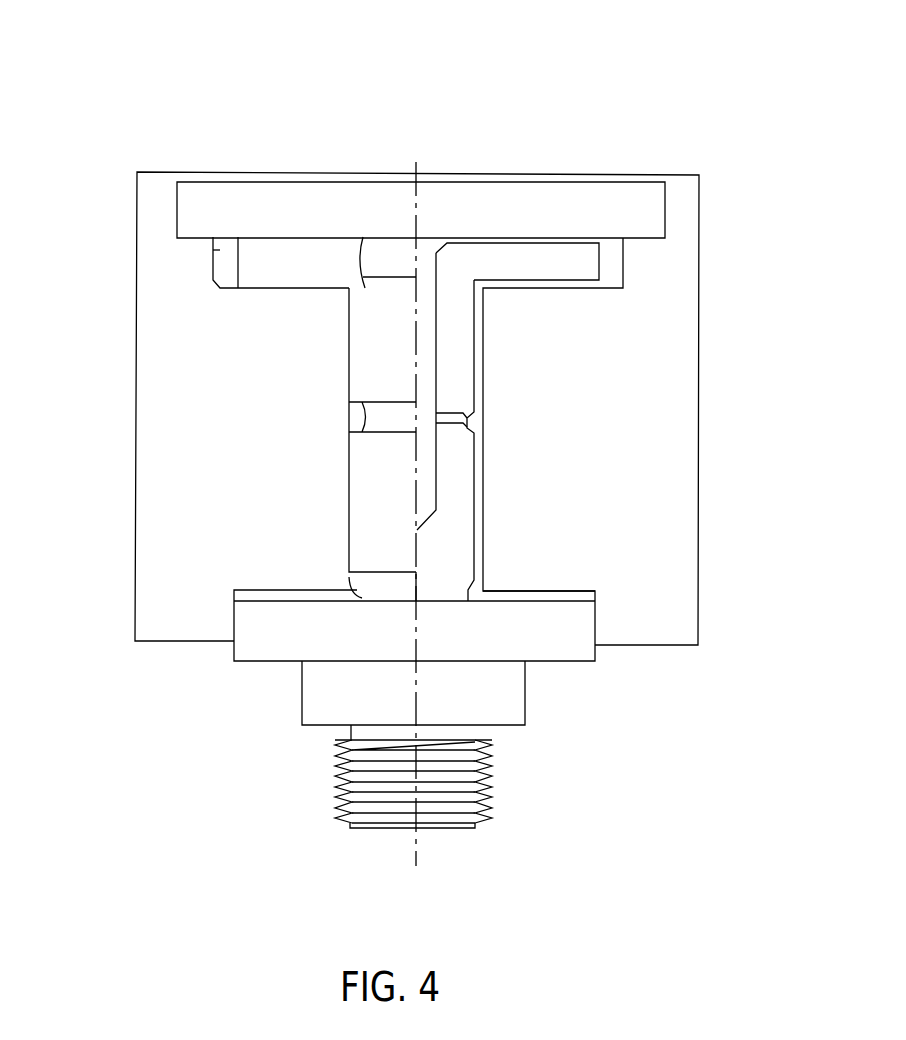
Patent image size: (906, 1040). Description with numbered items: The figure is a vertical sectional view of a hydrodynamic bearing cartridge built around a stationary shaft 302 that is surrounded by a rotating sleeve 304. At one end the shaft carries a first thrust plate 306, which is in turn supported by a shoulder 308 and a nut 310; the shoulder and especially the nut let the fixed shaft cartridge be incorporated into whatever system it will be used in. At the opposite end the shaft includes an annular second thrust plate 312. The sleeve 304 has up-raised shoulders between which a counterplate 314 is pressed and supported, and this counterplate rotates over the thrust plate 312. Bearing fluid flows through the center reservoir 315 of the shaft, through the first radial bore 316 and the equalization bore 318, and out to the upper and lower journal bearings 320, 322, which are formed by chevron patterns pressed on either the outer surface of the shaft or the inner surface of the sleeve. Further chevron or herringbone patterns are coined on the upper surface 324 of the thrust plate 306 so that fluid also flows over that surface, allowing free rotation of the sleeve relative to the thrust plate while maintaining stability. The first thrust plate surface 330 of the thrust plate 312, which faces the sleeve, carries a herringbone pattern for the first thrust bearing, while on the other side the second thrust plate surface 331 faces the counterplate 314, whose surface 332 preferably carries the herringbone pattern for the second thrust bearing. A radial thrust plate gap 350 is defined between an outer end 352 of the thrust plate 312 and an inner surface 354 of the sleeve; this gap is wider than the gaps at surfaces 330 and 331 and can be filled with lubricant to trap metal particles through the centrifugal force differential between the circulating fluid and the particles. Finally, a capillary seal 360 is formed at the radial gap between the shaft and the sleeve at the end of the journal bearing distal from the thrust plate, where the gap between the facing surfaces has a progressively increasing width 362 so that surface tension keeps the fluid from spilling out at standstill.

The shaft 302 is at (372, 360).
The rotating sleeve 304 is at (155, 475).
The first thrust plate 306 is at (262, 647).
The shoulder 308 is at (318, 706).
The nut 310 is at (378, 810).
The second thrust plate 312 is at (578, 265).
The counterplate 314 is at (311, 190).
The center reservoir 315 is at (430, 485).
The first radial bore 316 is at (478, 418).
The equalization bore 318 is at (357, 417).
The upper journal bearing 320 is at (485, 338).
The lower journal bearing 322 is at (480, 538).
The upper surface 324 is at (545, 601).
The first thrust plate surface 330 is at (266, 292).
The second thrust plate surface 331 is at (353, 237).
The counterplate surface 332 is at (532, 238).
The radial thrust plate gap 350 is at (222, 250).
The outer end 352 is at (220, 280).
The inner surface 354 is at (232, 233).
The capillary seal 360 is at (473, 604).
The progressively increasing width 362 is at (480, 596).